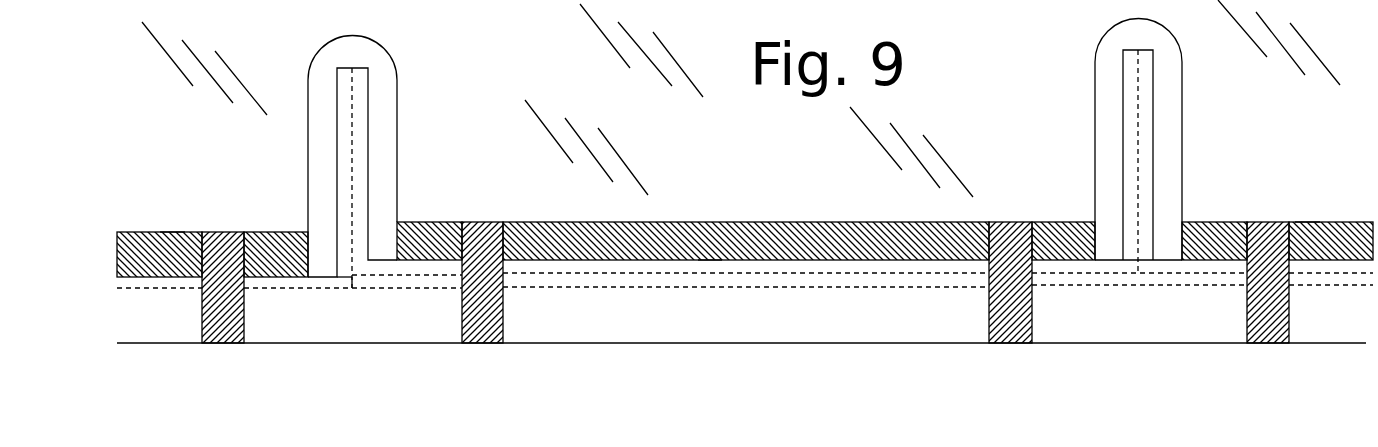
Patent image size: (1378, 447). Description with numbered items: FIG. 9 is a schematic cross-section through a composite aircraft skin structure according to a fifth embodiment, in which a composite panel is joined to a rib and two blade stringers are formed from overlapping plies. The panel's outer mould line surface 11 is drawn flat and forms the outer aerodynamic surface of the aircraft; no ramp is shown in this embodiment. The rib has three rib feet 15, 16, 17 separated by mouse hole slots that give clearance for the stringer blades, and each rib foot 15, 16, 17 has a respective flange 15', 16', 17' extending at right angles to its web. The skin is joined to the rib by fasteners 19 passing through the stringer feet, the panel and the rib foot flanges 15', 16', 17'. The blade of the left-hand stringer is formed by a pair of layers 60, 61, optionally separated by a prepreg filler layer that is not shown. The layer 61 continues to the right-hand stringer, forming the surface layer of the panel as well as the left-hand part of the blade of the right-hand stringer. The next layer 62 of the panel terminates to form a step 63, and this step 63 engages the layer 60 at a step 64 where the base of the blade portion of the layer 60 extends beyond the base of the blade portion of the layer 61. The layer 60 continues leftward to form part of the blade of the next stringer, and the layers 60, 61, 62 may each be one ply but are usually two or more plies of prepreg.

The outer mould line surface 11 is at (623, 343).
The rib foot 15 is at (204, 106).
The flange 15' is at (178, 182).
The rib foot 16 is at (749, 100).
The flange 16' is at (726, 327).
The rib foot 17 is at (1279, 52).
The flange 17' is at (1312, 174).
The fasteners 19 is at (463, 313).
The layer 60 is at (335, 188).
The layer 61 is at (358, 165).
The layer 62 is at (860, 278).
The step 63 is at (352, 277).
The step 64 is at (352, 277).